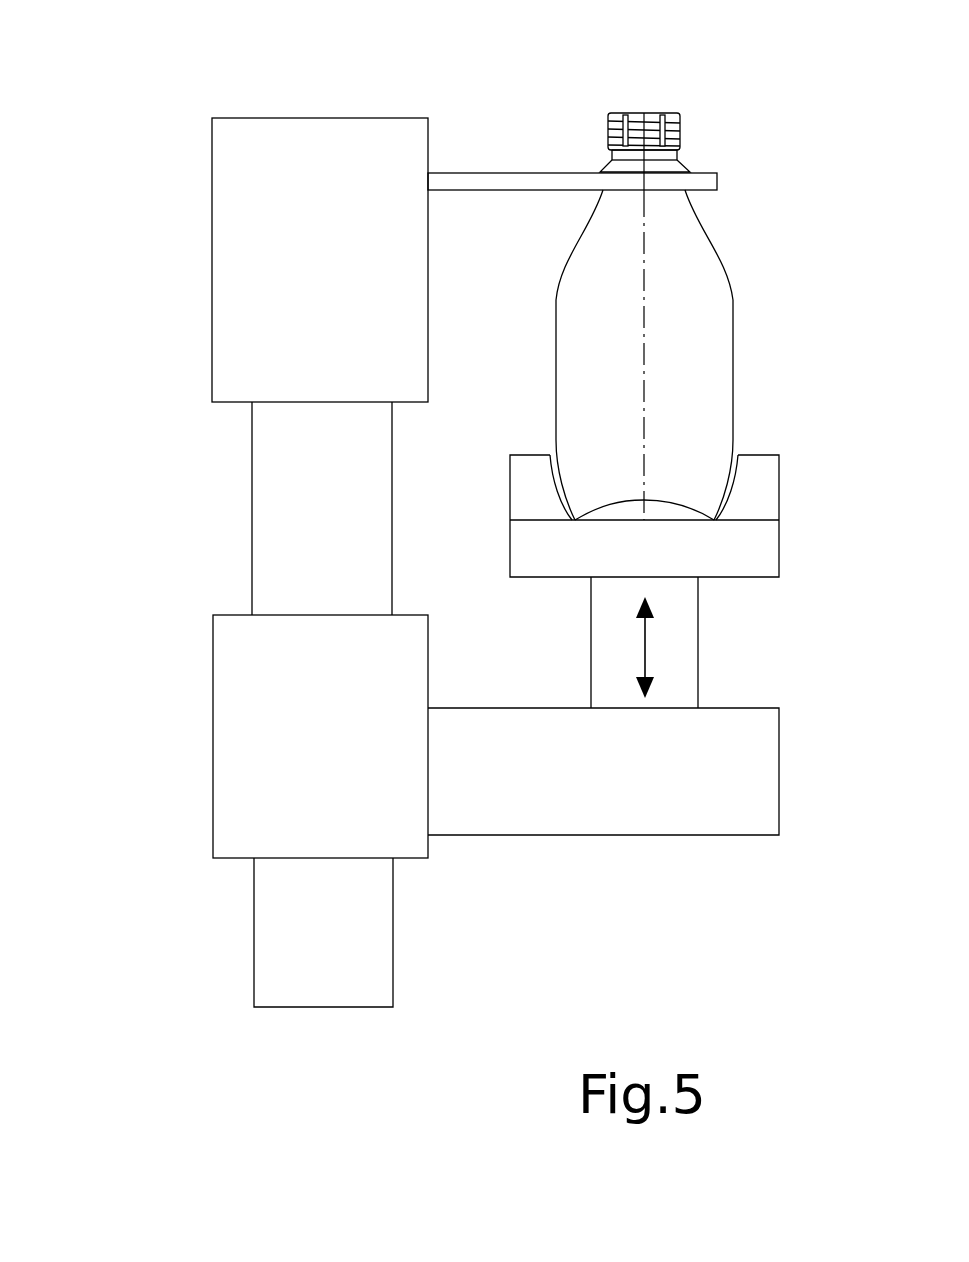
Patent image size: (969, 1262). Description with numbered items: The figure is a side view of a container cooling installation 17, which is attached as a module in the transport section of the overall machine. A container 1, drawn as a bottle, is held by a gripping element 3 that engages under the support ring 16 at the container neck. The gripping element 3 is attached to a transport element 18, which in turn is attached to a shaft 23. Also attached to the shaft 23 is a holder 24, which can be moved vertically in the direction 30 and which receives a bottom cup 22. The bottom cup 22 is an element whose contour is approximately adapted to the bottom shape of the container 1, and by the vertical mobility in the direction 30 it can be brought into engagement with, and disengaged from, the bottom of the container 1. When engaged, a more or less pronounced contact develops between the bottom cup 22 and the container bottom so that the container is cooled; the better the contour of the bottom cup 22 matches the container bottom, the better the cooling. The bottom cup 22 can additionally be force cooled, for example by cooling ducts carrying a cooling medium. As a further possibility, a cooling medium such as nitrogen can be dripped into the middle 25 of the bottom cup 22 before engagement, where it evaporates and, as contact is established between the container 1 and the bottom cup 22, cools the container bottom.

The container 1 is at (726, 286).
The gripping element 3 is at (716, 182).
The support ring 16 is at (683, 164).
The container cooling installation 17 is at (143, 802).
The transport element 18 is at (303, 128).
The bottom cup 22 is at (773, 548).
The shaft 23 is at (258, 512).
The holder 24 is at (412, 847).
The middle of the bottom cup 25 is at (642, 524).
The direction 30 is at (647, 662).